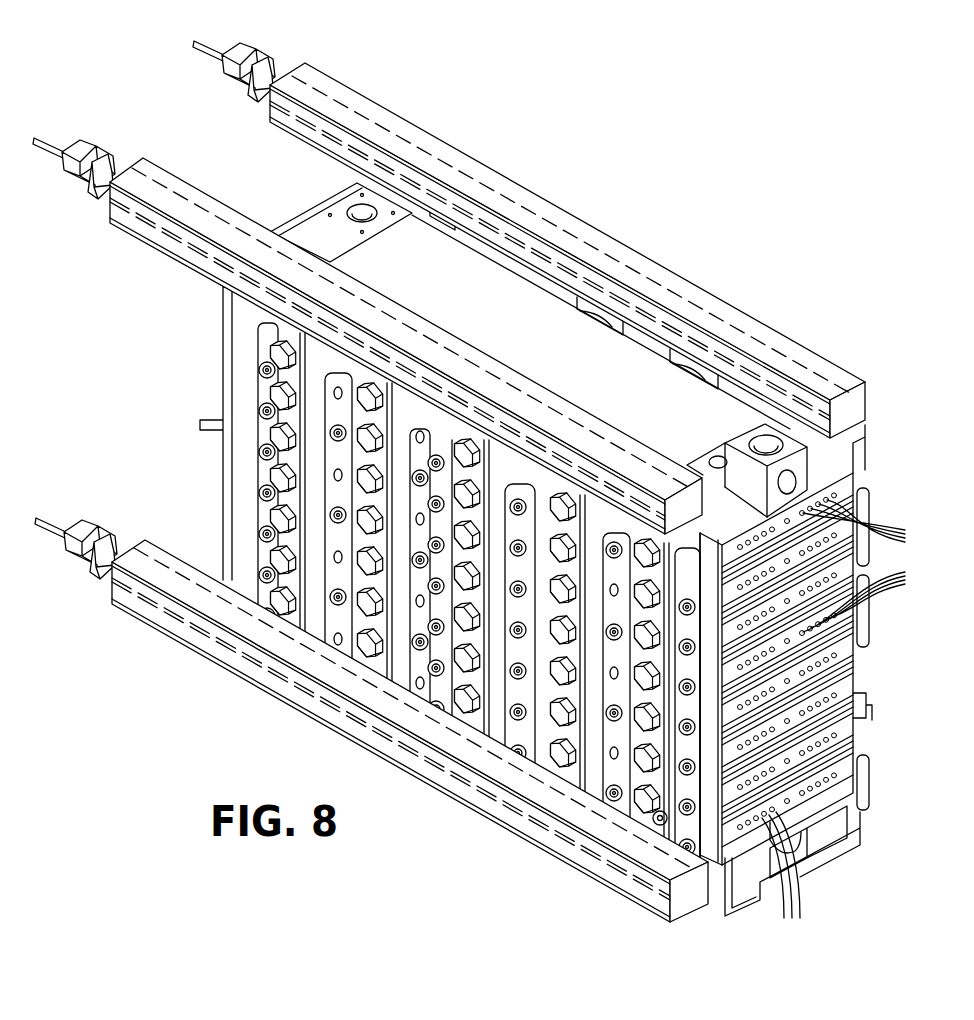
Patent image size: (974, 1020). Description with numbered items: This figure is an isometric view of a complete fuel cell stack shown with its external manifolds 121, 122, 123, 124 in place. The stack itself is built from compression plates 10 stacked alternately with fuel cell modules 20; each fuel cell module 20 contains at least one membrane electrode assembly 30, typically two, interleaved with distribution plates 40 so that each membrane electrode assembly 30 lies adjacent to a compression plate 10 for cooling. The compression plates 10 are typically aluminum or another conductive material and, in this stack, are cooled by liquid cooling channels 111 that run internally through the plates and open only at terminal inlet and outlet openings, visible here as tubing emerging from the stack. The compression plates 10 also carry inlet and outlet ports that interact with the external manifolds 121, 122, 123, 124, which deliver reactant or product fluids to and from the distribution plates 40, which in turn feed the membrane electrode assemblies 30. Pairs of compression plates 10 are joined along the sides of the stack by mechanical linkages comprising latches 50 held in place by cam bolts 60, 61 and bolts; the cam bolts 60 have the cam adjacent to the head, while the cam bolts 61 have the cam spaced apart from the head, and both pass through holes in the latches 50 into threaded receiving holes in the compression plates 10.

The compression plate 10 is at (850, 733).
The fuel cell module 20 is at (872, 705).
The membrane electrode assembly 30 is at (852, 626).
The distribution plate 40 is at (853, 668).
The latch 50 is at (658, 815).
The cam bolt 60 is at (520, 727).
The cam bolt 61 is at (510, 690).
The liquid cooling channel 111 is at (853, 722).
The external manifold 121 is at (199, 252).
The external manifold 122 is at (313, 695).
The external manifold 123 is at (815, 372).
The external manifold 124 is at (858, 796).